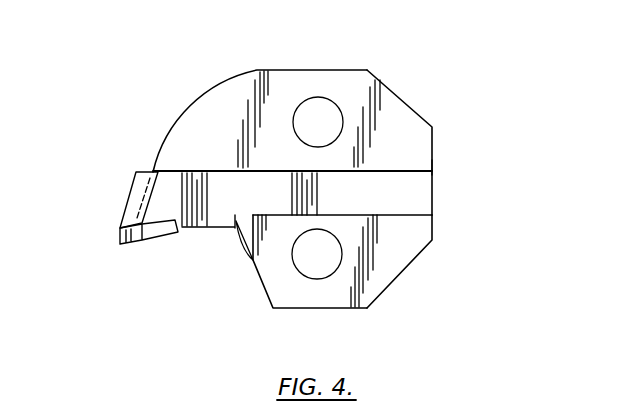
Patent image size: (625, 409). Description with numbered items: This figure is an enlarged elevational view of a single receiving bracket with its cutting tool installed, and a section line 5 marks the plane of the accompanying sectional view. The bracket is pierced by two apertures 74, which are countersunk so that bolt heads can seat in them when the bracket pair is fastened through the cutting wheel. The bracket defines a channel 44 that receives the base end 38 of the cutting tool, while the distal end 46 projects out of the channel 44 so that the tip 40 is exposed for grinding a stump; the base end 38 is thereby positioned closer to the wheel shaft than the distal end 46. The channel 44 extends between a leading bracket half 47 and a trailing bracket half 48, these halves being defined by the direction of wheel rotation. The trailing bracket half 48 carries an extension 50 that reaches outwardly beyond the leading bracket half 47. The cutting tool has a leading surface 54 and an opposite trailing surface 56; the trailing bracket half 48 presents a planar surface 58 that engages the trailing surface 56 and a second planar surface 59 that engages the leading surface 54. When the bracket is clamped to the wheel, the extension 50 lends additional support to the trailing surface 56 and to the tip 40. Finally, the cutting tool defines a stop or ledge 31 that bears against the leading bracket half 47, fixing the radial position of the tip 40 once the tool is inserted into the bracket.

The section line 5- 5 is at (132, 198).
The stop or ledge 31 is at (252, 258).
The base end 38 is at (433, 174).
The tip 40 is at (160, 243).
The channel 44 is at (436, 190).
The distal end 46 is at (130, 192).
The leading bracket half 47 is at (406, 272).
The trailing bracket half 48 is at (398, 95).
The extension 50 is at (188, 110).
The leading surface 54 is at (414, 216).
The trailing surface 56 is at (407, 171).
The planar surface 58 is at (170, 188).
The second planar surface 59 is at (345, 215).
The apertures 74 is at (320, 97).